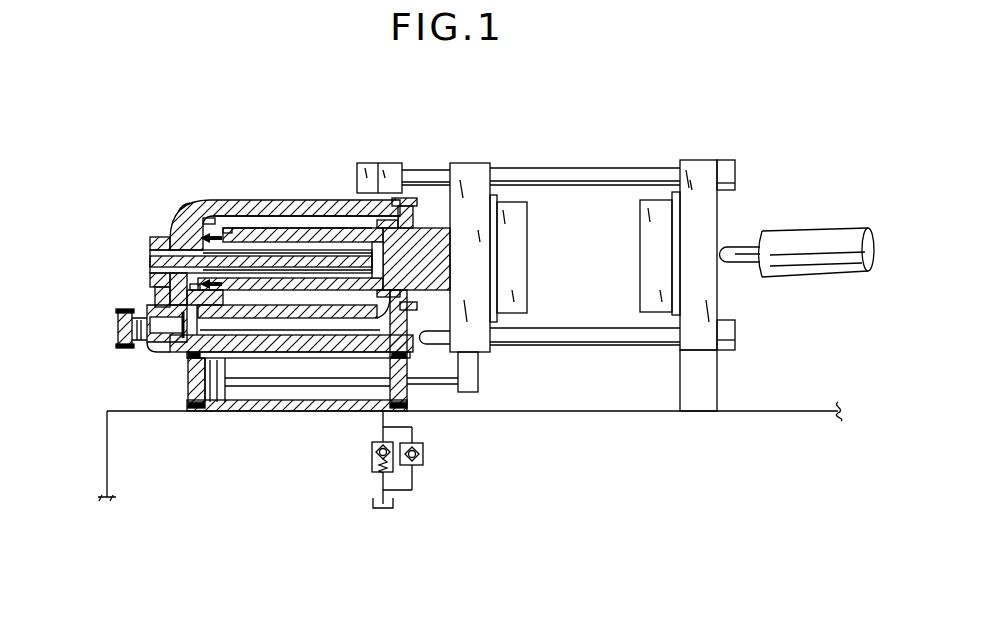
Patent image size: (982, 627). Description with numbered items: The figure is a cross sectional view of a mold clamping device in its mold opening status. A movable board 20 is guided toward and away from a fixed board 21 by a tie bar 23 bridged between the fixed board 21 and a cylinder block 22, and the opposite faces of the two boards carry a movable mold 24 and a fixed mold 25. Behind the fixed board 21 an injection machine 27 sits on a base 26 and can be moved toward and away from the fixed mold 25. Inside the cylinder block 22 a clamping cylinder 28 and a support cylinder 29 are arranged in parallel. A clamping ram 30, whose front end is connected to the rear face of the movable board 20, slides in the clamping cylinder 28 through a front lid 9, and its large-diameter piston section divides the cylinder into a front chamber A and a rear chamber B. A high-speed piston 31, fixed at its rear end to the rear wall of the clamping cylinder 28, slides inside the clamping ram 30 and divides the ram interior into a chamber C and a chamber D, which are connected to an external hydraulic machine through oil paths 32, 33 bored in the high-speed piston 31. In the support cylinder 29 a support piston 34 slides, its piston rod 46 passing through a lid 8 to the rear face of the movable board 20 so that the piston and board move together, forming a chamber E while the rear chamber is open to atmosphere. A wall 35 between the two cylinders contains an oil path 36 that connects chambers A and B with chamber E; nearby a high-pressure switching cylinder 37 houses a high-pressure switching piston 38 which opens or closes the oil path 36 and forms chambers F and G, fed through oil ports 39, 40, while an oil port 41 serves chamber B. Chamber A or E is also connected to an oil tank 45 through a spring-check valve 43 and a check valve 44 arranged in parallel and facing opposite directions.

The lid 8 is at (407, 396).
The front lid 9 is at (410, 210).
The movable board 20 is at (478, 165).
The fixed board 21 is at (705, 170).
The cylinder block 22 is at (192, 198).
The tie bar 23 is at (610, 176).
The movable mold 24 is at (527, 262).
The fixed mold 25 is at (648, 277).
The base 26 is at (798, 411).
The injection machine 27 is at (822, 237).
The clamping cylinder 28 is at (345, 200).
The support cylinder 29 is at (322, 401).
The clamping ram 30 is at (288, 238).
The high-speed piston 31 is at (232, 230).
The oil path 32 is at (150, 264).
The oil path 33 is at (155, 252).
The support piston 34 is at (207, 406).
The wall 35 is at (345, 352).
The oil path 36 is at (257, 330).
The high-pressure switching cylinder 37 is at (118, 333).
The high-pressure switching piston 38 is at (160, 330).
The oil port 39 is at (137, 348).
The oil port 40 is at (170, 343).
The oil port 41 is at (152, 296).
The spring-check valve 43 is at (373, 462).
The check valve 44 is at (425, 462).
The oil tank 45 is at (400, 508).
The piston rod 46 is at (268, 388).
The front chamber A is at (255, 232).
The rear chamber B is at (182, 207).
The chamber C is at (392, 258).
The chamber D is at (322, 222).
The chamber E is at (290, 397).
The chamber F is at (118, 322).
The chamber G is at (168, 335).